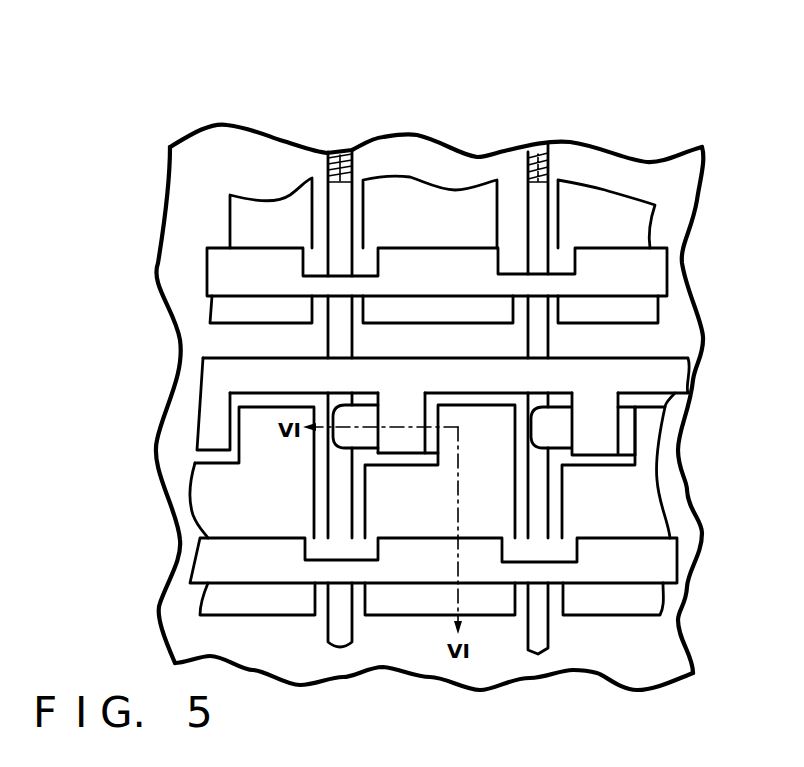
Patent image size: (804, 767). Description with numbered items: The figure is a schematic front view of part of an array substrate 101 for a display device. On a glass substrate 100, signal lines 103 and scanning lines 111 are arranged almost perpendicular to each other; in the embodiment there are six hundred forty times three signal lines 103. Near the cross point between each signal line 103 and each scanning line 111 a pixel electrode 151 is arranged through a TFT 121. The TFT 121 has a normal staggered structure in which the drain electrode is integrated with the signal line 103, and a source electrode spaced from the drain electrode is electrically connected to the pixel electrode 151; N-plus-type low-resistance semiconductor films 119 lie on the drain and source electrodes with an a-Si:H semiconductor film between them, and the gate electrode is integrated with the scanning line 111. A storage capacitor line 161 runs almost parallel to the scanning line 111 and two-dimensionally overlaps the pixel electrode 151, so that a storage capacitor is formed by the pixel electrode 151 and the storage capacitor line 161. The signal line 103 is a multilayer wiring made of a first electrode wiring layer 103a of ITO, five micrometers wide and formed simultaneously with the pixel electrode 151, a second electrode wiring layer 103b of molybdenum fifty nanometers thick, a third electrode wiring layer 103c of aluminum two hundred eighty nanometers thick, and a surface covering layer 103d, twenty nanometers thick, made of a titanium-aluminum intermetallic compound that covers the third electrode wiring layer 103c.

The glass substrate 100 is at (682, 177).
The array substrate 101 is at (636, 121).
The signal line 103 is at (543, 636).
The first electrode wiring layer 103a is at (331, 153).
The second electrode wiring layer 103b is at (346, 160).
The third electrode wiring layer 103c is at (350, 174).
The surface covering layer 103d is at (340, 194).
The scanning line 111 is at (660, 376).
The low-resistance semiconductor film 119 is at (558, 417).
The TFT 121 is at (606, 441).
The pixel electrode 151 is at (275, 600).
The storage capacitor line 161 is at (657, 272).